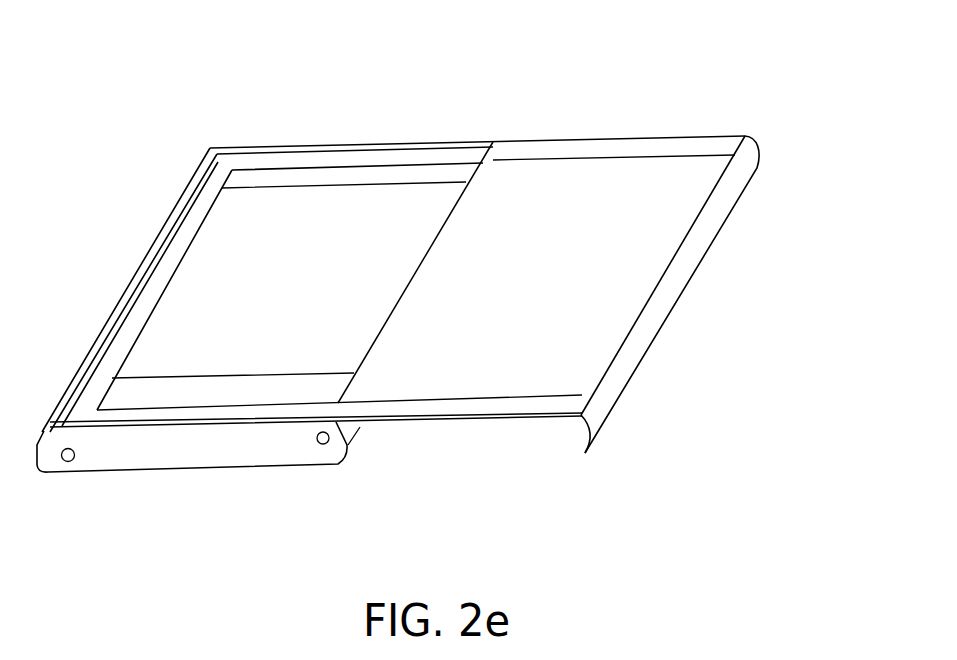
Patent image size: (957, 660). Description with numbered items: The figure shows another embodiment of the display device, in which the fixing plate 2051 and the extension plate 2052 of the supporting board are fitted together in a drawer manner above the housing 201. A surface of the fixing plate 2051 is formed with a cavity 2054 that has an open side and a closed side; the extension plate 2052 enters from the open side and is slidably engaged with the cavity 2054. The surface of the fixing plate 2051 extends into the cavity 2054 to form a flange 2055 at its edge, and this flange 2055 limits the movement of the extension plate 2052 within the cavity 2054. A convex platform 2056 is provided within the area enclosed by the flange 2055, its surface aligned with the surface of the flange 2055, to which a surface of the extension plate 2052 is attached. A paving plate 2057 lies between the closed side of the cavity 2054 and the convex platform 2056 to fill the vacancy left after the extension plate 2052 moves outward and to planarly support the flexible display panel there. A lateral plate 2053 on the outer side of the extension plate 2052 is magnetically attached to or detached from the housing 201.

The housing 201 is at (182, 445).
The fixing plate 2051 is at (193, 193).
The extension plate 2052 is at (615, 148).
The lateral plate 2053 is at (670, 280).
The cavity 2054 is at (375, 177).
The flange 2055 is at (293, 160).
The convex platform 2056 is at (525, 203).
The paving plate 2057 is at (200, 258).